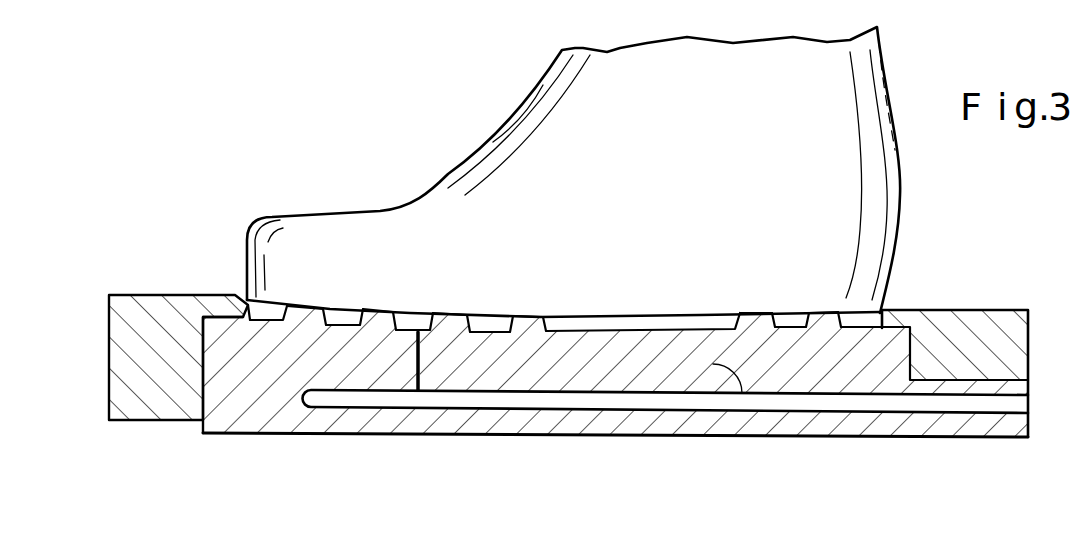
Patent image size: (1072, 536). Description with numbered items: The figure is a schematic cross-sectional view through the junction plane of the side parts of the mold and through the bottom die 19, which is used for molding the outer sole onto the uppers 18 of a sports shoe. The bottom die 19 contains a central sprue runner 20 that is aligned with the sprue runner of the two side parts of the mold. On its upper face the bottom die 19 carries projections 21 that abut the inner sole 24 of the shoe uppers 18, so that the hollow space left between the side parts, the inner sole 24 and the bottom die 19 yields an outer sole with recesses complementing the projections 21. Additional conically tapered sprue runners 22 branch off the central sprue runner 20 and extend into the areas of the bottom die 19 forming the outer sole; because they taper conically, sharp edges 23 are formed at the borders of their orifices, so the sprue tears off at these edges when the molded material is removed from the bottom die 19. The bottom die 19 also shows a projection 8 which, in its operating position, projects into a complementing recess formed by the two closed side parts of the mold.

The projection 8 is at (975, 387).
The uppers 18 is at (390, 275).
The bottom die 19 is at (230, 375).
The central sprue runner 20 is at (878, 405).
The projections 21 is at (460, 318).
The conically tapered sprue runners 22 is at (742, 393).
The sharp edges 23 is at (713, 393).
The inner sole 24 is at (309, 306).